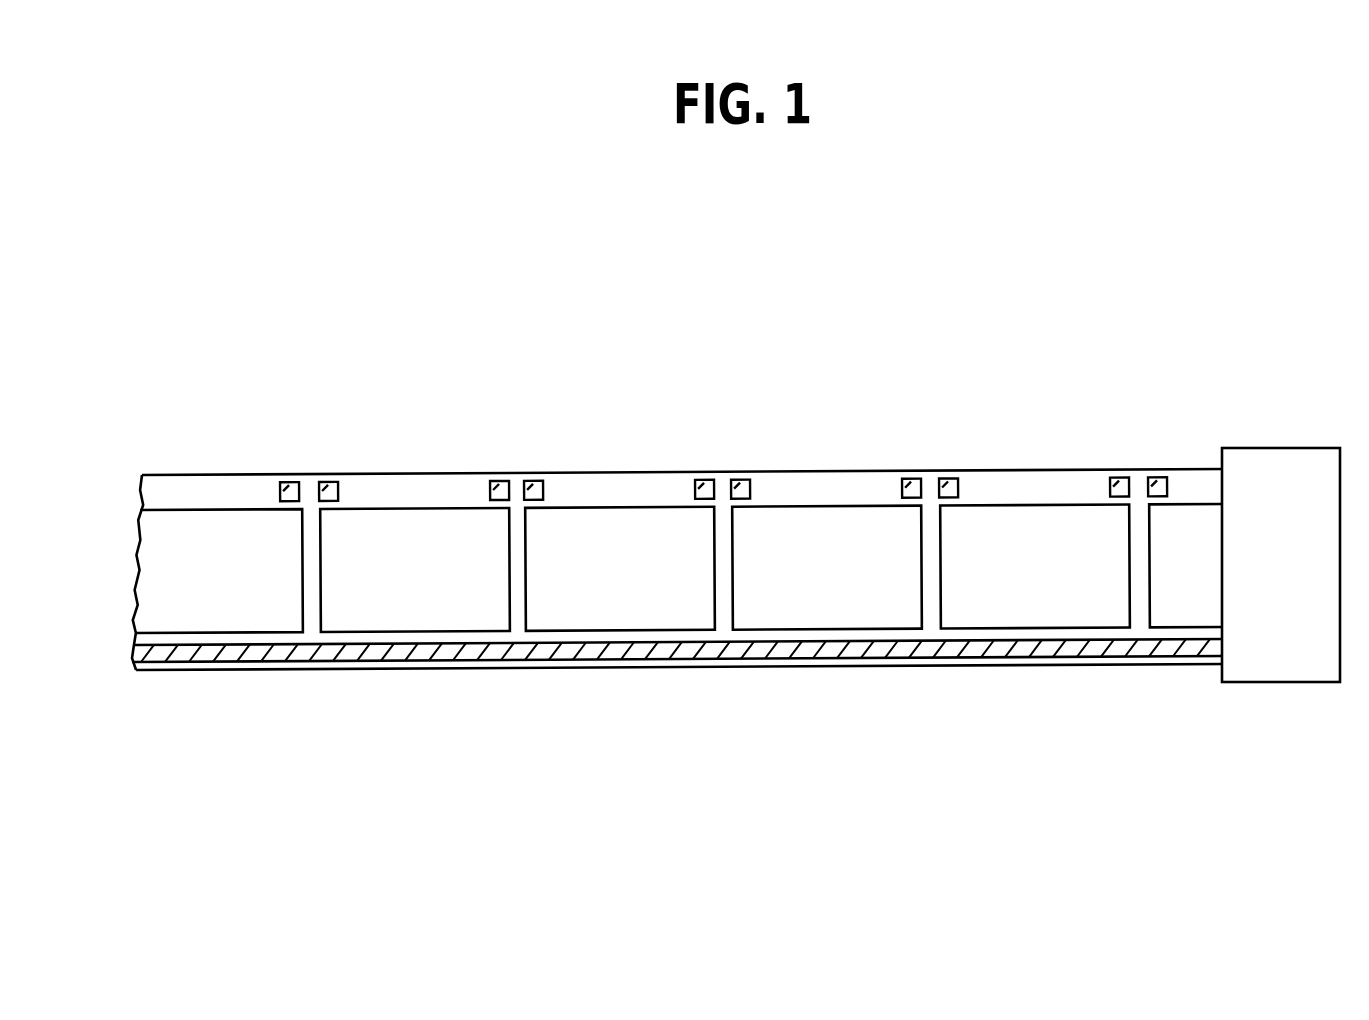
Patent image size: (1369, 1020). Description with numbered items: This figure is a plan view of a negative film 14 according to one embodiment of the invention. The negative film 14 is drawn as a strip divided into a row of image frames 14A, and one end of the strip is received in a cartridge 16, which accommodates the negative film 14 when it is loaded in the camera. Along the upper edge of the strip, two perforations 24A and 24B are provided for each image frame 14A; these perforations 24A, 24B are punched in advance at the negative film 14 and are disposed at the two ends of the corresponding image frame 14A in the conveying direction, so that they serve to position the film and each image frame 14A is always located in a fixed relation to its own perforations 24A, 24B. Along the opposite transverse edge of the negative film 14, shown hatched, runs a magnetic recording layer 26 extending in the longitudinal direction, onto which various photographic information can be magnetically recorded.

The negative film 14 is at (833, 470).
The image frame 14A is at (204, 528).
The cartridge 16 is at (1270, 465).
The perforation 24A is at (289, 482).
The perforation 24B is at (328, 482).
The magnetic recording layer 26 is at (247, 653).